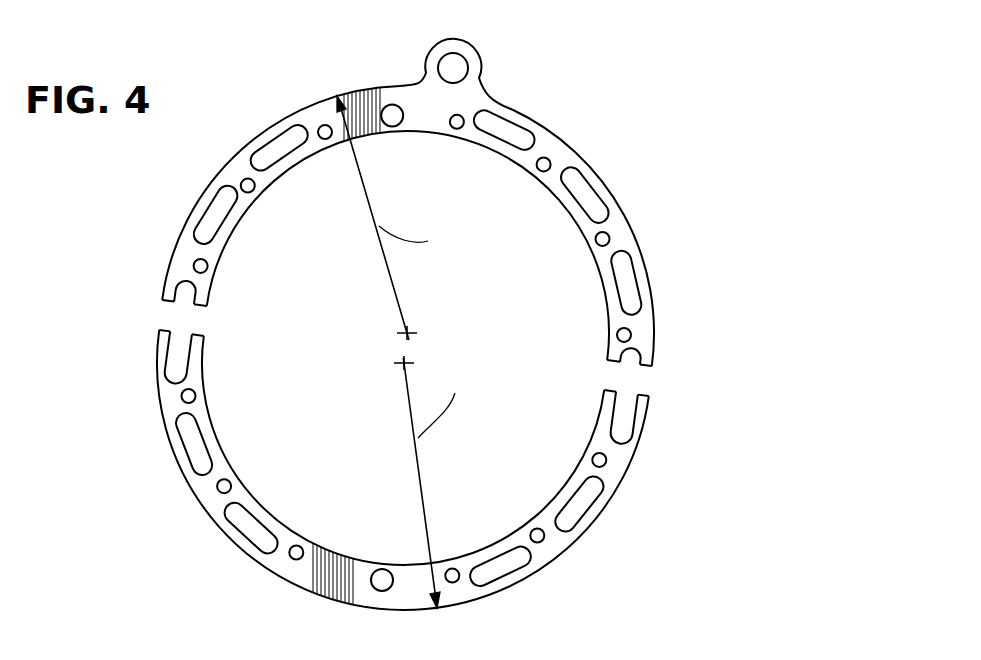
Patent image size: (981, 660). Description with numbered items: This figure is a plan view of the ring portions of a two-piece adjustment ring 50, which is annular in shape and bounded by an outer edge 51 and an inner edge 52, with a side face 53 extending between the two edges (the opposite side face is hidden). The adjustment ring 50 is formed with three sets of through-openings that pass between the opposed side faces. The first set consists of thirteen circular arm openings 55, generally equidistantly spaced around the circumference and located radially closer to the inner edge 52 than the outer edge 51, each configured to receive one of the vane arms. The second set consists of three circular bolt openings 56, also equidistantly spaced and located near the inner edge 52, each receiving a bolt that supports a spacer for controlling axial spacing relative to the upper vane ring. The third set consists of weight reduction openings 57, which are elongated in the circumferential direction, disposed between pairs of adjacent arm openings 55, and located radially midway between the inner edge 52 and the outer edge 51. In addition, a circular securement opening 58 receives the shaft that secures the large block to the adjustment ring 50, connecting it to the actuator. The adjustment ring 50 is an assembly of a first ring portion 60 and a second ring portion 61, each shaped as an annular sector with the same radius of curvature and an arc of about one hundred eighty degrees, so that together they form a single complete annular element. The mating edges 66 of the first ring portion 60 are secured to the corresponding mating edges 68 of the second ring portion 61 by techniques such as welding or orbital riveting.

The adjustment ring 50 is at (691, 112).
The outer edge 51 is at (538, 125).
The inner edge 52 is at (434, 135).
The side face 53 is at (558, 148).
The arm openings 55 is at (253, 190).
The bolt openings 56 is at (389, 104).
The weight reduction openings 57 is at (627, 262).
The securement opening 58 is at (440, 76).
The first ring portion 60 is at (178, 215).
The second ring portion 61 is at (157, 410).
The mating edges 66 is at (160, 300).
The mating edges 68 is at (158, 331).